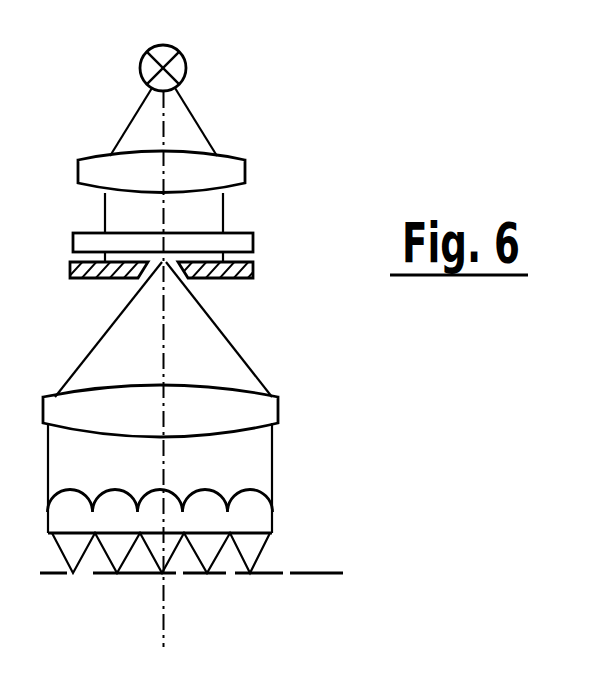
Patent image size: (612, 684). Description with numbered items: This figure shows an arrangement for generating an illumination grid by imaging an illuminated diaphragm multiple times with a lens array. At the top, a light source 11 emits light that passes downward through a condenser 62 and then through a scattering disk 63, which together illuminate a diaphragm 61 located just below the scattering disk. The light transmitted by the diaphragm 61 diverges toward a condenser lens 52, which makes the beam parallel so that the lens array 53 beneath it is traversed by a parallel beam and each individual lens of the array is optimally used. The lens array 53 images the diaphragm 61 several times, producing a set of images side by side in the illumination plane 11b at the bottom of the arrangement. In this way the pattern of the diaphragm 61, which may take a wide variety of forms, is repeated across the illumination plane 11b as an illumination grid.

The light source 11 is at (186, 62).
The condenser 62 is at (235, 169).
The scattering disk 63 is at (78, 233).
The diaphragm 61 is at (233, 278).
The condenser lens 52 is at (250, 418).
The lens array 53 is at (250, 520).
The illumination plane 11b is at (312, 573).